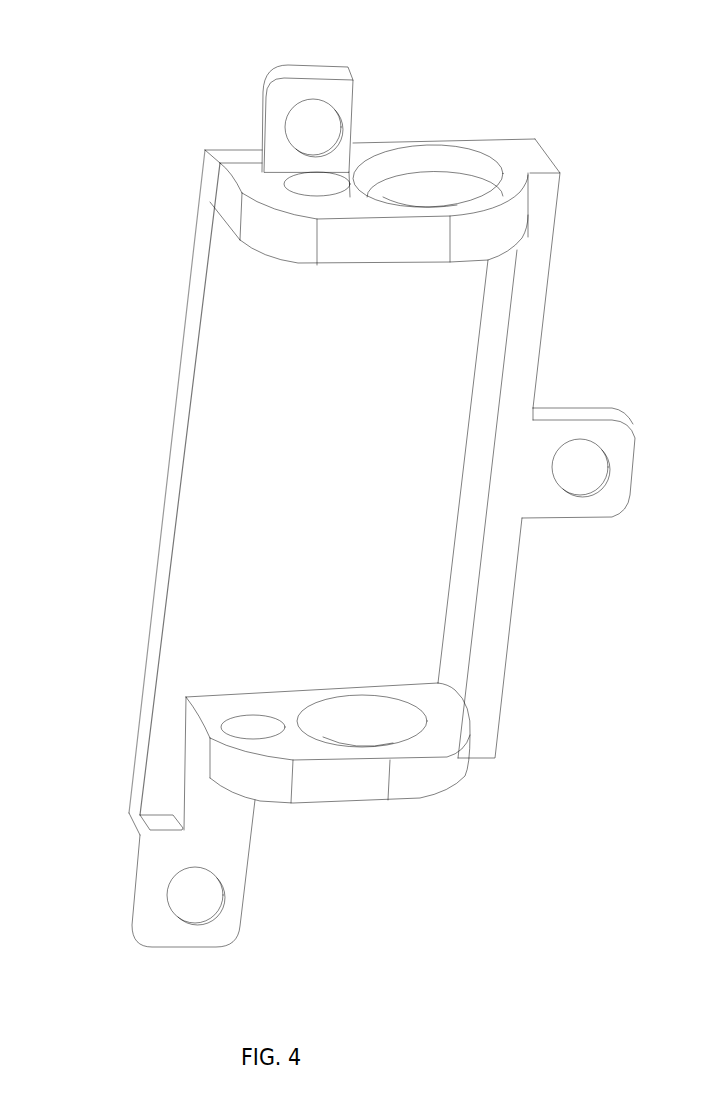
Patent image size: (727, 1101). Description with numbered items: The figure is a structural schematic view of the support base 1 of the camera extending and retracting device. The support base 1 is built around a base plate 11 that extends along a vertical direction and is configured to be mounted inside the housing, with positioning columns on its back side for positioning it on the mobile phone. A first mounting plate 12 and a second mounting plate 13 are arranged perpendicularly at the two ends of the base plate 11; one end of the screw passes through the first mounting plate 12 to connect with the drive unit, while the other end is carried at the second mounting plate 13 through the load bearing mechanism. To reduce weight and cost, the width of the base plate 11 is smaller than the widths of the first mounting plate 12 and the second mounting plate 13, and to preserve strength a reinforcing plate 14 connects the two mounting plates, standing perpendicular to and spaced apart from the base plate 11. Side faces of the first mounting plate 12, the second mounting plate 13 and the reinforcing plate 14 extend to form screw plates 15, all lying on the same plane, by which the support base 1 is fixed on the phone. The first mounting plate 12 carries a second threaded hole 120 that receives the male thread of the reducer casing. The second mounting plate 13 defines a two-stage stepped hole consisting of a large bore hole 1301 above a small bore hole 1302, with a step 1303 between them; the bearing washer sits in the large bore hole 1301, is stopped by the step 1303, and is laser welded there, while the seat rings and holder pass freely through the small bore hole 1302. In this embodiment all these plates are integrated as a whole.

The support base 1 is at (130, 292).
The base plate 11 is at (228, 466).
The first mounting plate 12 is at (213, 712).
The second threaded hole 120 is at (372, 727).
The second mounting plate 13 is at (283, 195).
The large bore hole 1301 is at (405, 158).
The small bore hole 1302 is at (457, 200).
The step 1303 is at (452, 182).
The reinforcing plate 14 is at (527, 327).
The screw plate 15 is at (322, 87).